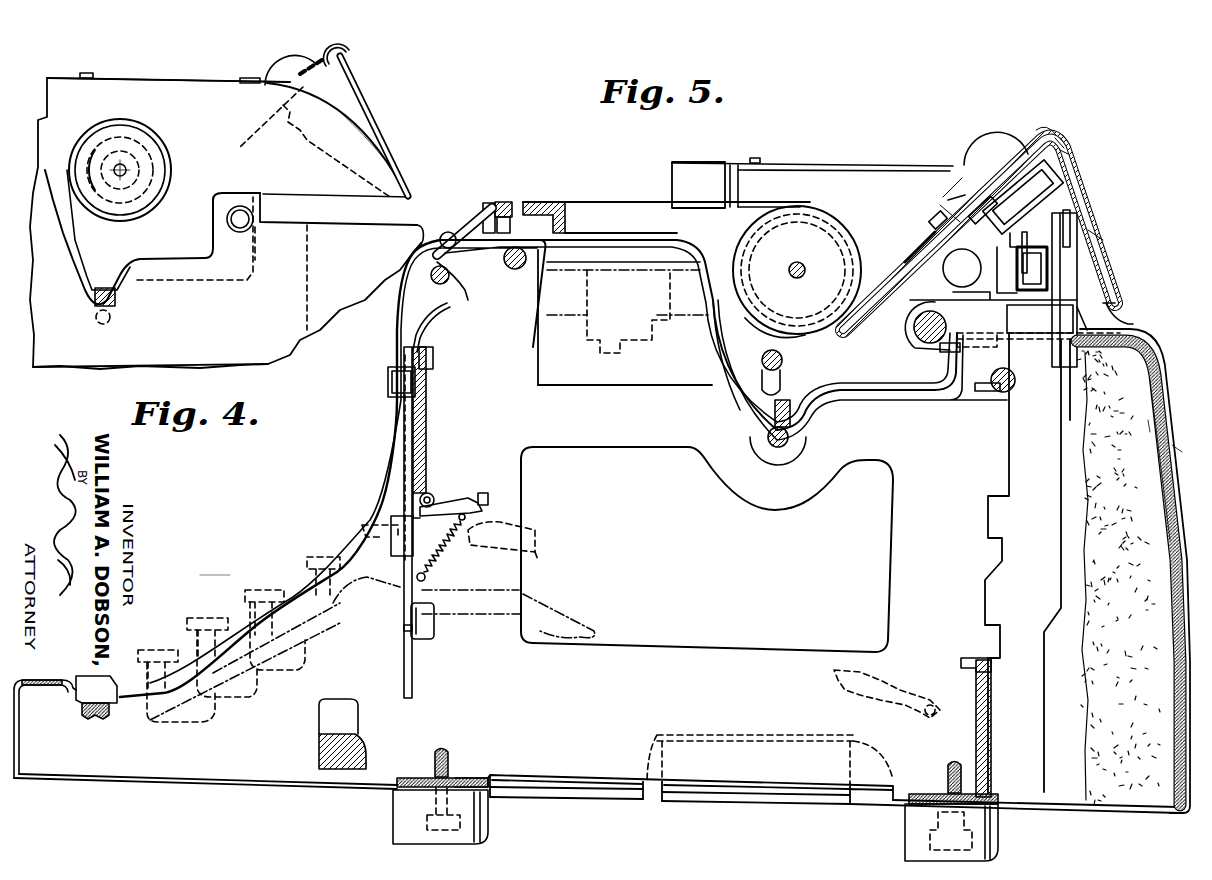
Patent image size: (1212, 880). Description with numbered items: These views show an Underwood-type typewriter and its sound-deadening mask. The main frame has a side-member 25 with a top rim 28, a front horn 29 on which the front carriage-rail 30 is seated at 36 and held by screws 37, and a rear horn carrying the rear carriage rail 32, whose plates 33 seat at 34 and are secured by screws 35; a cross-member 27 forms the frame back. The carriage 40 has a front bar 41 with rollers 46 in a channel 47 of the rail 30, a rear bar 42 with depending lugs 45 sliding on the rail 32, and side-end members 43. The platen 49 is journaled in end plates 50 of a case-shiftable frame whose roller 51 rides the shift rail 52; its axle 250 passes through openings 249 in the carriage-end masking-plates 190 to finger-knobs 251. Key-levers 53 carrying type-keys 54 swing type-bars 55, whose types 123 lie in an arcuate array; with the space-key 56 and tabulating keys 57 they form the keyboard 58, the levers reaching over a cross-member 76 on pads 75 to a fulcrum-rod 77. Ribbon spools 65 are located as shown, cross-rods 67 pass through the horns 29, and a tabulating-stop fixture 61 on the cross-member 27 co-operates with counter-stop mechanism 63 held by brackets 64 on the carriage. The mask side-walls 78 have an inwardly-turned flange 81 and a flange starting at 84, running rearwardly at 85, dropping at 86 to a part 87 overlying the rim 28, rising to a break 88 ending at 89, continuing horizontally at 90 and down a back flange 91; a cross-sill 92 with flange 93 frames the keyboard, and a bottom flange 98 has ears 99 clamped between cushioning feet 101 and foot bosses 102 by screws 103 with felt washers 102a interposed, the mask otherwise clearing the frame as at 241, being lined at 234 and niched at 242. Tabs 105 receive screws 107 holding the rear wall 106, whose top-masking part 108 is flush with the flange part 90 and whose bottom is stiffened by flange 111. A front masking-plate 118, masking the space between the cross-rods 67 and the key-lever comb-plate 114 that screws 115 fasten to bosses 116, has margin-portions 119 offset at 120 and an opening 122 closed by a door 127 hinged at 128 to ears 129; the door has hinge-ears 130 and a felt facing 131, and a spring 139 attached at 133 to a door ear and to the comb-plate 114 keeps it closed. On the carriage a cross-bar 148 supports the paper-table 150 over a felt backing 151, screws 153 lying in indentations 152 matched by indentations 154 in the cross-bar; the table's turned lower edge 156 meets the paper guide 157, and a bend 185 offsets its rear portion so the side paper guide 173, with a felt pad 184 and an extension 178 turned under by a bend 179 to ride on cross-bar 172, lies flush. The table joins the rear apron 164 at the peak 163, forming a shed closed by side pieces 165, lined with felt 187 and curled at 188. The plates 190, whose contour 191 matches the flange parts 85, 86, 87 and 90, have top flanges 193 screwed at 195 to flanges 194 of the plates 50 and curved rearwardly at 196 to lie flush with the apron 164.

In FIG. 5, the main-frame side-member 25 is at (633, 448).
In FIG. 5, the frame-back-forming cross-member 27 is at (976, 720).
In FIG. 5, the top rim 28 is at (634, 385).
In FIG. 5, the front horn 29 is at (523, 343).
In FIG. 5, the front carriage-rail 30 is at (490, 217).
In FIG. 4, the rear carriage rail 32 is at (243, 224).
In FIG. 5, the rear carriage rail 32 is at (935, 345).
In FIG. 4, the rearwardly-extending plates 33 is at (290, 223).
In FIG. 5, the rearwardly-extending plates 33 is at (1010, 340).
In FIG. 5, the seat 34 is at (977, 348).
In FIG. 5, the screws 35 is at (1005, 318).
In FIG. 5, the seat 36 is at (460, 250).
In FIG. 5, the screws 37 is at (456, 234).
In FIG. 4, the typewriter carriage 40 is at (134, 77).
In FIG. 5, the typewriter carriage 40 is at (847, 161).
In FIG. 5, the front bar 41 is at (560, 203).
In FIG. 5, the rear bar 42 is at (915, 312).
In FIG. 5, the side-end members 43 is at (610, 217).
In FIG. 5, the depending lugs 45 is at (907, 345).
In FIG. 5, the rollers 46 is at (500, 210).
In FIG. 5, the channel 47 is at (507, 202).
In FIG. 5, the revoluble platen 49 is at (843, 237).
In FIG. 5, the end plates 50 is at (750, 197).
In FIG. 4, the roller 51 is at (112, 300).
In FIG. 5, the roller 51 is at (792, 412).
In FIG. 5, the shift rail 52 is at (780, 448).
In FIG. 5, the key-levers 53 is at (249, 692).
In FIG. 5, the type-keys 54 is at (265, 586).
In FIG. 5, the type-bars 55 is at (538, 552).
In FIG. 5, the space-key 56 is at (113, 707).
In FIG. 5, the denominational tabulating keys 57 is at (367, 527).
In FIG. 5, the keyboard 58 is at (215, 574).
In FIG. 5, the column-like fixture 61 is at (995, 591).
In FIG. 5, the counter-stop mechanism 63 is at (1019, 247).
In FIG. 5, the brackets 64 is at (960, 295).
In FIG. 5, the ribbon spools 65 is at (670, 324).
In FIG. 5, the cross-rods 67 is at (450, 277).
In FIG. 5, the pads 75 is at (361, 722).
In FIG. 5, the cross-member 76 is at (330, 747).
In FIG. 5, the fulcrum-rod 77 is at (950, 762).
In FIG. 4, the side-walls 78 is at (113, 350).
In FIG. 5, the side-walls 78 is at (245, 760).
In FIG. 5, the inwardly-turned flange 81 is at (397, 340).
In FIG. 5, the flange starting point 84 is at (556, 261).
In FIG. 5, the horizontal flange part 85 is at (623, 268).
In FIG. 4, the flange drop 86 is at (87, 313).
In FIG. 5, the flange drop 86 is at (723, 388).
In FIG. 4, the lower horizontal flange part 87 is at (167, 281).
In FIG. 5, the lower horizontal flange part 87 is at (853, 393).
In FIG. 5, the break 88 is at (987, 400).
In FIG. 5, the break end 89 is at (1016, 374).
In FIG. 4, the rearwardly horizontal flange part 90 is at (337, 228).
In FIG. 5, the rearwardly horizontal flange part 90 is at (1087, 335).
In FIG. 5, the back flange 91 is at (1182, 505).
In FIG. 5, the cross-sill 92 is at (18, 730).
In FIG. 5, the inwardly-turned flange 93 is at (39, 680).
In FIG. 5, the bottom flange 98 is at (175, 782).
In FIG. 5, the ears 99 is at (924, 806).
In FIG. 5, the cushioning feet 101 is at (393, 817).
In FIG. 5, the foot bosses 102 is at (410, 766).
In FIG. 5, the washer 102a is at (465, 776).
In FIG. 5, the foot screw 103 is at (489, 823).
In FIG. 5, the tabs 105 is at (1146, 427).
In FIG. 5, the rear wall 106 is at (1180, 450).
In FIG. 5, the screws 107 is at (1155, 380).
In FIG. 5, the top-masking part 108 is at (1123, 336).
In FIG. 5, the stiffening flange 111 is at (1150, 817).
In FIG. 5, the key-lever comb-plate 114 is at (405, 668).
In FIG. 5, the screws 115 is at (405, 629).
In FIG. 5, the bosses 116 is at (432, 622).
In FIG. 5, the masking-plate 118 is at (373, 587).
In FIG. 5, the side margin-portions 119 is at (389, 400).
In FIG. 5, the offset 120 is at (400, 450).
In FIG. 5, the rectangular opening 122 is at (362, 527).
In FIG. 5, the types 123 is at (523, 504).
In FIG. 5, the door 127 is at (413, 470).
In FIG. 5, the hinge 128 is at (431, 494).
In FIG. 5, the ears 129 is at (428, 493).
In FIG. 5, the hinge-ears 130 is at (465, 501).
In FIG. 5, the sound-insulating material 131 is at (427, 403).
In FIG. 5, the spring attachment 133 is at (488, 493).
In FIG. 5, the spring 139 is at (448, 553).
In FIG. 5, the cross-bar 148 is at (983, 212).
In FIG. 5, the rear paper-table 150 is at (883, 290).
In FIG. 5, the sound-deadening backing 151 is at (997, 165).
In FIG. 5, the spot-indentations 152 is at (943, 220).
In FIG. 5, the screws 153 is at (953, 213).
In FIG. 5, the indentations 154 is at (957, 249).
In FIG. 5, the lower edge 156 is at (828, 318).
In FIG. 5, the paper guide 157 is at (773, 350).
In FIG. 5, the peak 163 is at (1043, 128).
In FIG. 5, the rear apron 164 is at (1103, 237).
In FIG. 4, the side pieces 165 is at (350, 93).
In FIG. 5, the side pieces 165 is at (1113, 287).
In FIG. 5, the cross-bar 172 is at (1040, 180).
In FIG. 4, the side paper guide 173 is at (280, 67).
In FIG. 5, the side paper guide 173 is at (953, 190).
In FIG. 5, the extension 178 is at (1070, 152).
In FIG. 5, the bend 179 is at (1063, 137).
In FIG. 5, the felt pad 184 is at (950, 197).
In FIG. 5, the bend 185 is at (927, 253).
In FIG. 5, the sound-deadening material 187 is at (1073, 217).
In FIG. 5, the curled edge 188 is at (1120, 312).
In FIG. 4, the carriage-end masking-plates 190 is at (105, 88).
In FIG. 4, the contour 191 is at (263, 193).
In FIG. 5, the contour 191 is at (680, 232).
In FIG. 5, the top flanges 193 is at (693, 163).
In FIG. 5, the flanges 194 is at (738, 167).
In FIG. 5, the screws 195 is at (767, 162).
In FIG. 4, the curved flange portion 196 is at (380, 132).
In FIG. 5, the sound-proofing lining 234 is at (1163, 685).
In FIG. 5, the mask clearance 241 is at (450, 305).
In FIG. 5, the niche 242 is at (695, 737).
In FIG. 4, the openings 249 is at (140, 183).
In FIG. 4, the platen axle 250 is at (147, 151).
In FIG. 5, the platen axle 250 is at (796, 262).
In FIG. 4, the finger-knobs 251 is at (80, 148).
In FIG. 5, the finger-knobs 251 is at (810, 198).